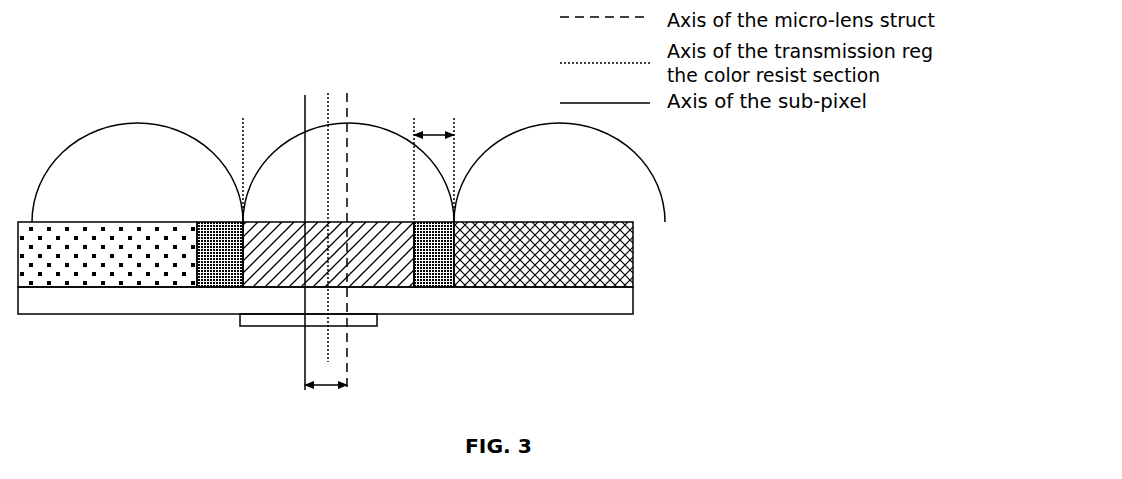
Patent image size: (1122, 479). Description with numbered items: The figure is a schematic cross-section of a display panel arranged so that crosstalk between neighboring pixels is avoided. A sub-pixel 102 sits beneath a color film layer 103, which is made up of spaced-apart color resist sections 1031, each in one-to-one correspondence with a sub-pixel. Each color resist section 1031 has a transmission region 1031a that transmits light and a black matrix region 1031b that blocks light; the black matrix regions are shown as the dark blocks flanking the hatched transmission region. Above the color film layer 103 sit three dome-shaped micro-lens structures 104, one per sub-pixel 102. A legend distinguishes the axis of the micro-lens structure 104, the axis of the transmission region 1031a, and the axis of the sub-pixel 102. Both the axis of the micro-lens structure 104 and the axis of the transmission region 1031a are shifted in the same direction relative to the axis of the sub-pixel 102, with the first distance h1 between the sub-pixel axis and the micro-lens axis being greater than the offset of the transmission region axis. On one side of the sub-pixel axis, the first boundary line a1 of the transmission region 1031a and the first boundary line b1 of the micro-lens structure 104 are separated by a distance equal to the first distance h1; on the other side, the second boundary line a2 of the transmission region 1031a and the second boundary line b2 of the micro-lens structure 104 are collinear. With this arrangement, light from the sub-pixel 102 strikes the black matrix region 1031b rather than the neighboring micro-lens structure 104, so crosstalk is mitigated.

The sub-pixel 102 is at (282, 328).
The color film layer 103 is at (325, 314).
The micro-lens structure 104 is at (132, 168).
The color resist section 1031 is at (351, 314).
The transmission region 1031a is at (336, 290).
The black matrix region 1031b is at (440, 262).
The first boundary line of the transmission region a1 is at (413, 247).
The second boundary line of the transmission region a2 is at (238, 277).
The first boundary line of the micro-lens structure b1 is at (455, 167).
The second boundary line of the micro-lens structure b2 is at (240, 146).
The first distance h1 is at (379, 261).